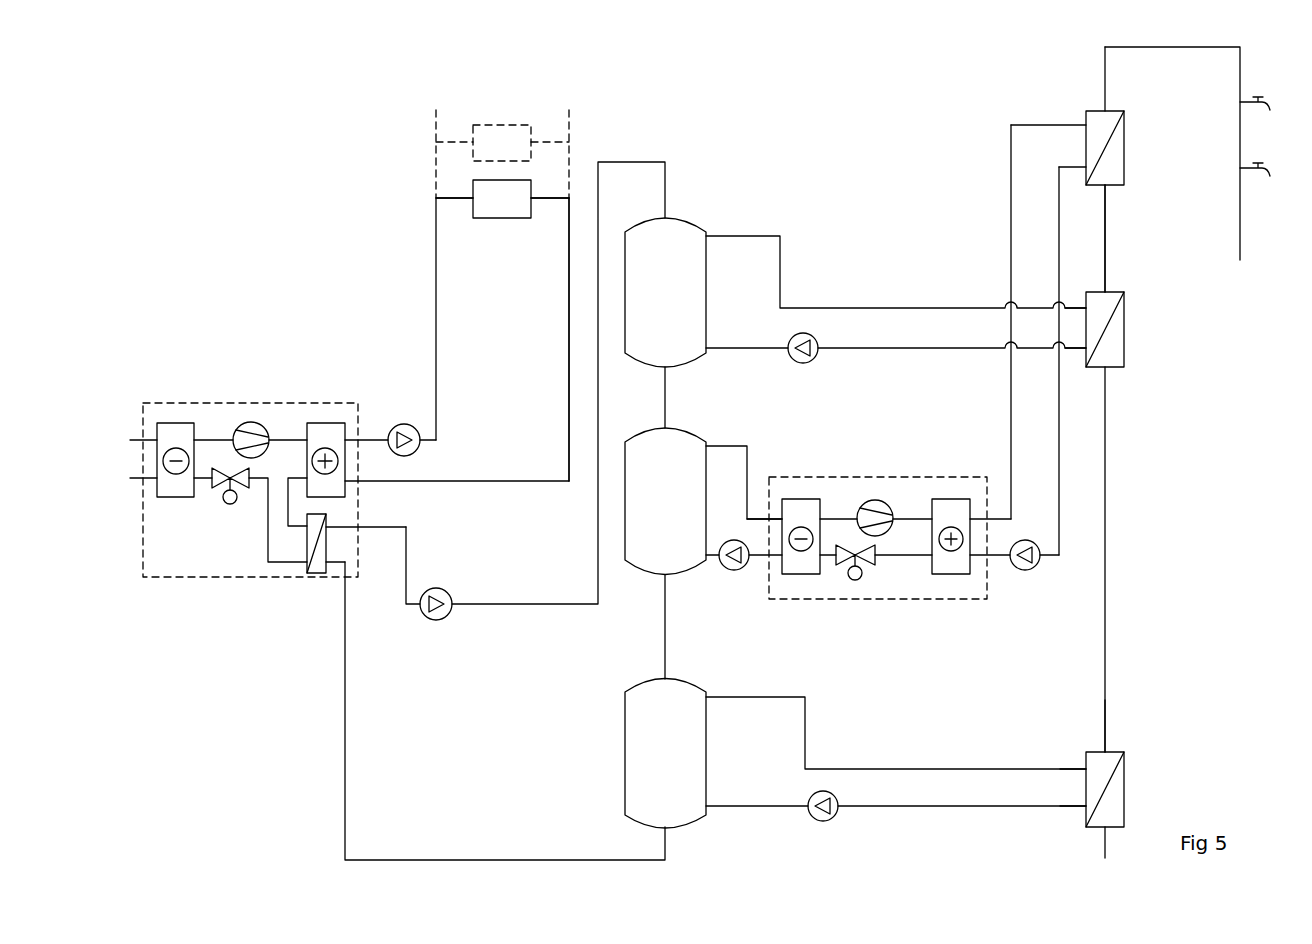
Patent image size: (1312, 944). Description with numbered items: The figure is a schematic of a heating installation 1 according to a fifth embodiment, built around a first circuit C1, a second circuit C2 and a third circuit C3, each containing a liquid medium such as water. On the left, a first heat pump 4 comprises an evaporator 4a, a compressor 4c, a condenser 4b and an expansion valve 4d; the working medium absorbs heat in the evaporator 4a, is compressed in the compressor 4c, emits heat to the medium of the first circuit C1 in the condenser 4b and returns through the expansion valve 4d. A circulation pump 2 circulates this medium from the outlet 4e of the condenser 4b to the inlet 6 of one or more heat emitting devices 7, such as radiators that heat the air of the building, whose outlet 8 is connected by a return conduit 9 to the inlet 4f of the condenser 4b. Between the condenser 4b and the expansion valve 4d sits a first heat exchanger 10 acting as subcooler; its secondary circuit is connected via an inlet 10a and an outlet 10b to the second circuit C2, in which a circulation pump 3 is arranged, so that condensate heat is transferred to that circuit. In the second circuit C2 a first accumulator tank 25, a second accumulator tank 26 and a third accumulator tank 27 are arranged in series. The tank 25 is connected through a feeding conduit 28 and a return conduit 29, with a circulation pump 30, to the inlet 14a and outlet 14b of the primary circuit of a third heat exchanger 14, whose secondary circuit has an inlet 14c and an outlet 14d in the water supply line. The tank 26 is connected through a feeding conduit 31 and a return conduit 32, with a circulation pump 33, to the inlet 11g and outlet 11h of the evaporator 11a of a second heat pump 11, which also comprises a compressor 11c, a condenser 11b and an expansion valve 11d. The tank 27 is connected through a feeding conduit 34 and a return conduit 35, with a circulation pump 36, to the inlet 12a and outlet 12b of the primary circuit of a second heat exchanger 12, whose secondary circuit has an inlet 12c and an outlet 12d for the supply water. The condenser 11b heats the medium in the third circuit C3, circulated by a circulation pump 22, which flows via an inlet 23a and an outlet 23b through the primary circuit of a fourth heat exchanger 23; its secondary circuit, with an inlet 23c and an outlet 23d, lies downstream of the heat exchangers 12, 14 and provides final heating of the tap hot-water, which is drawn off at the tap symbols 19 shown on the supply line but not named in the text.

The heating installation 1 is at (276, 770).
The circulation pump 2 is at (406, 427).
The circulation pump 3 is at (441, 593).
The first heat pump 4 is at (206, 404).
The evaporator 4a is at (172, 422).
The condenser 4b is at (320, 422).
The compressor 4c is at (253, 421).
The expansion valve 4d is at (218, 484).
The outlet of the condenser 4e is at (347, 436).
The inlet of the condenser 4f is at (346, 491).
The inlet of the heat emitting devices 6 is at (435, 197).
The heat emitting devices 7 is at (507, 133).
The outlet of the heat emitting devices 8 is at (563, 204).
The return conduit 9 is at (569, 326).
The first heat exchanger 10 is at (317, 567).
The inlet of the secondary circuit 10a is at (332, 571).
The outlet of the secondary circuit 10b is at (328, 529).
The second heat pump 11 is at (915, 482).
The evaporator 11a is at (812, 570).
The condenser 11b is at (953, 571).
The compressor 11c is at (878, 500).
The expansion valve 11d is at (867, 563).
The inlet of the evaporator 11g is at (778, 515).
The outlet of the evaporator 11h is at (780, 558).
The second heat exchanger 12 is at (1123, 781).
The inlet of the primary circuit 12a is at (1086, 767).
The outlet of the primary circuit 12b is at (1086, 809).
The inlet of the secondary circuit 12c is at (1113, 829).
The outlet of the secondary circuit 12d is at (1110, 751).
The third heat exchanger 14 is at (1116, 331).
The inlet of the primary circuit 14a is at (1078, 306).
The outlet of the primary circuit 14b is at (1078, 354).
The inlet of the secondary circuit 14c is at (1105, 369).
The outlet of the secondary circuit 14d is at (1105, 292).
The tap / consumer outlet 19 is at (1268, 98).
The circulation pump 22 is at (1029, 566).
The fourth heat exchanger 23 is at (1117, 158).
The inlet of the primary circuit 23a is at (1085, 122).
The outlet of the primary circuit 23b is at (1085, 167).
The inlet of the secondary circuit 23c is at (1104, 189).
The outlet of the secondary circuit 23d is at (1104, 110).
The first accumulator tank 25 is at (678, 228).
The second accumulator tank 26 is at (678, 438).
The third accumulator tank 27 is at (645, 693).
The feeding conduit 28 is at (866, 307).
The return conduit 29 is at (897, 351).
The circulation pump 30 is at (810, 363).
The feeding conduit 31 is at (746, 437).
The return conduit 32 is at (760, 549).
The circulation pump 33 is at (733, 569).
The feeding conduit 34 is at (806, 718).
The return conduit 35 is at (916, 809).
The circulation pump 36 is at (827, 819).
The first circuit C1 is at (427, 297).
The second circuit C2 is at (548, 590).
The third circuit C3 is at (995, 411).